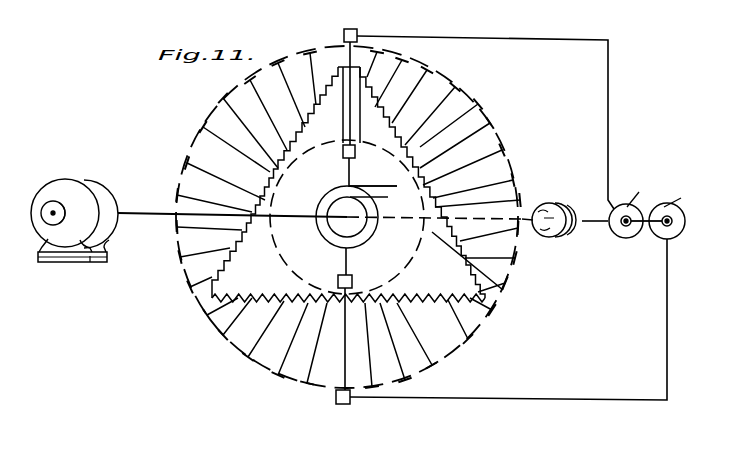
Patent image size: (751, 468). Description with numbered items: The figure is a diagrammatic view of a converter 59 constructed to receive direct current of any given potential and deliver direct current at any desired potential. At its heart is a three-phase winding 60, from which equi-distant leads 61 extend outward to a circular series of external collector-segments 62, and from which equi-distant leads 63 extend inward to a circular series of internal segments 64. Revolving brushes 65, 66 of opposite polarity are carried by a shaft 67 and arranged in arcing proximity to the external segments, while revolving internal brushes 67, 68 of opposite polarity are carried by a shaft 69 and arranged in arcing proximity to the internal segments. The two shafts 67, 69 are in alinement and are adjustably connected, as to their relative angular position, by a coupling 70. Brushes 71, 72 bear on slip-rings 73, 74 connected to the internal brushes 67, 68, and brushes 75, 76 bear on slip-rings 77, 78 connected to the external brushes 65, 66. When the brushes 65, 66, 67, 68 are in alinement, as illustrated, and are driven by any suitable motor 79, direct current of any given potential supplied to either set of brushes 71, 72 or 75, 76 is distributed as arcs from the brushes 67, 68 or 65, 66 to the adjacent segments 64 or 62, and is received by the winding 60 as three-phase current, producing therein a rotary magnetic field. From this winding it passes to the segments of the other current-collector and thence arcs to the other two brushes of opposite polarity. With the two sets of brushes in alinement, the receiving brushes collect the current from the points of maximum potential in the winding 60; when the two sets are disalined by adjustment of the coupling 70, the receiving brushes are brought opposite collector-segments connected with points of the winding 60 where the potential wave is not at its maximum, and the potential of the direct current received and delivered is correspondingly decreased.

The converter 59 is at (203, 126).
The three-phase winding 60 is at (287, 157).
The leads 61 is at (283, 122).
The external collector-segments 62 is at (222, 98).
The leads 63 is at (343, 151).
The internal segments 64 is at (284, 178).
The revolving brush 65 is at (358, 30).
The revolving brush 66 is at (350, 403).
The shaft 67 is at (356, 153).
The revolving brush 68 is at (338, 279).
The shaft 69 is at (157, 217).
The coupling 70 is at (565, 197).
The brush 71 is at (383, 183).
The brush 72 is at (380, 199).
The slip-ring 73 is at (333, 196).
The slip-ring 74 is at (326, 208).
The brush 75 is at (643, 191).
The brush 76 is at (685, 195).
The slip-ring 77 is at (631, 233).
The slip-ring 78 is at (679, 231).
The motor 79 is at (80, 178).